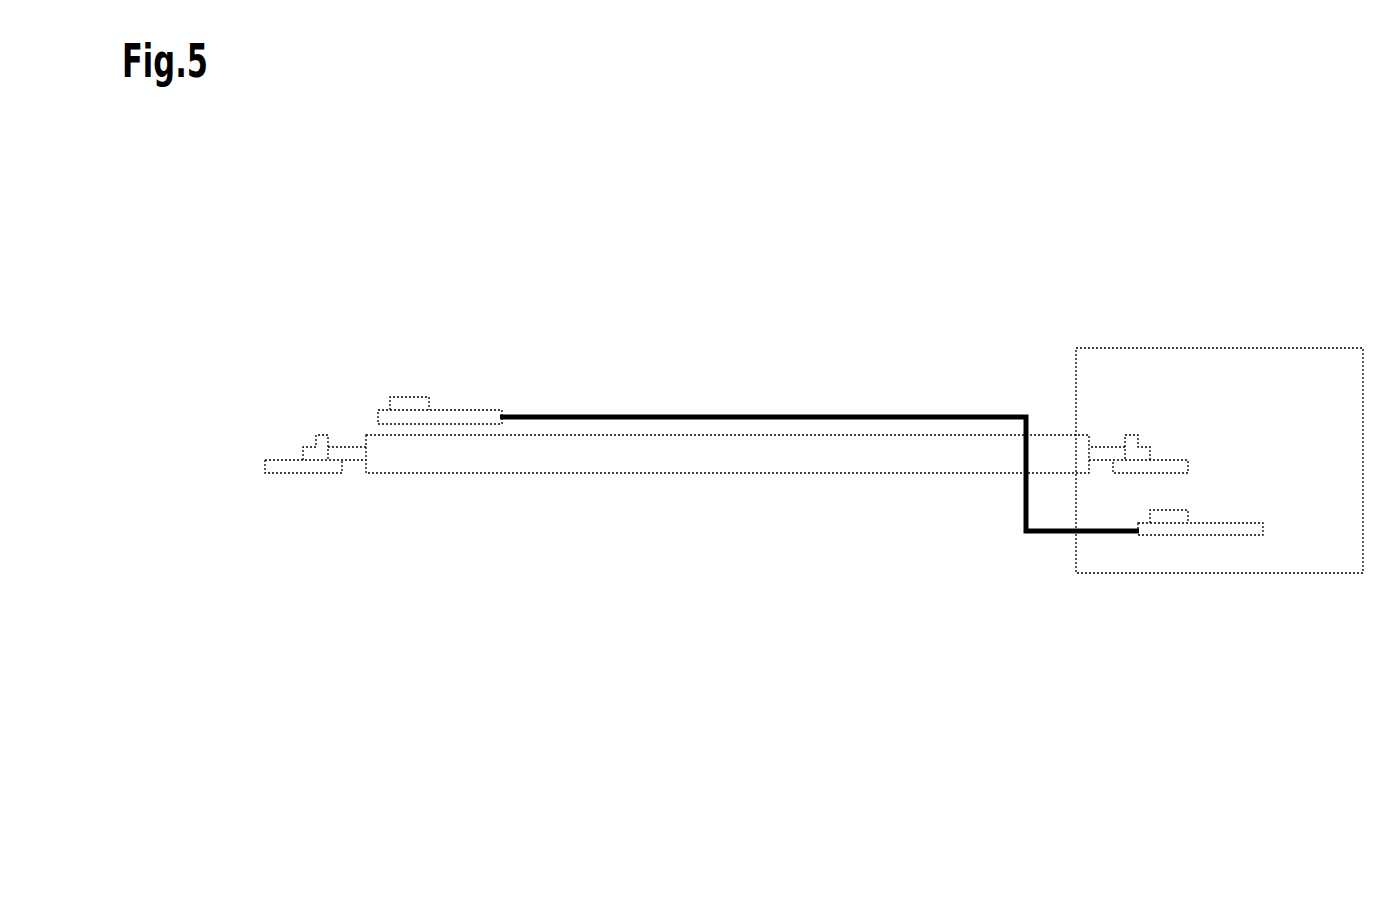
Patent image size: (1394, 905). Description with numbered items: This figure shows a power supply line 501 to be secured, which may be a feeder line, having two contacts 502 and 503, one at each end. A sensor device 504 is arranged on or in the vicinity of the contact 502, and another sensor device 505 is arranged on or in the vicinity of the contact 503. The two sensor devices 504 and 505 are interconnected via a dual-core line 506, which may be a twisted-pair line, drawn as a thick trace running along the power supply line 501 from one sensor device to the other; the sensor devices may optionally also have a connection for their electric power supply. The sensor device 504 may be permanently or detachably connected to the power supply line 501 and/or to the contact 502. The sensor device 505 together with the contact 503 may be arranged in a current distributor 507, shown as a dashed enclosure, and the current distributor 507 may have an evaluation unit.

The power supply line 501 is at (635, 475).
The contact 502 is at (311, 475).
The contact 503 is at (1170, 460).
The sensor device 504 is at (478, 410).
The sensor device 505 is at (1238, 523).
The dual-core line 506 is at (737, 415).
The current distributor 507 is at (1101, 573).